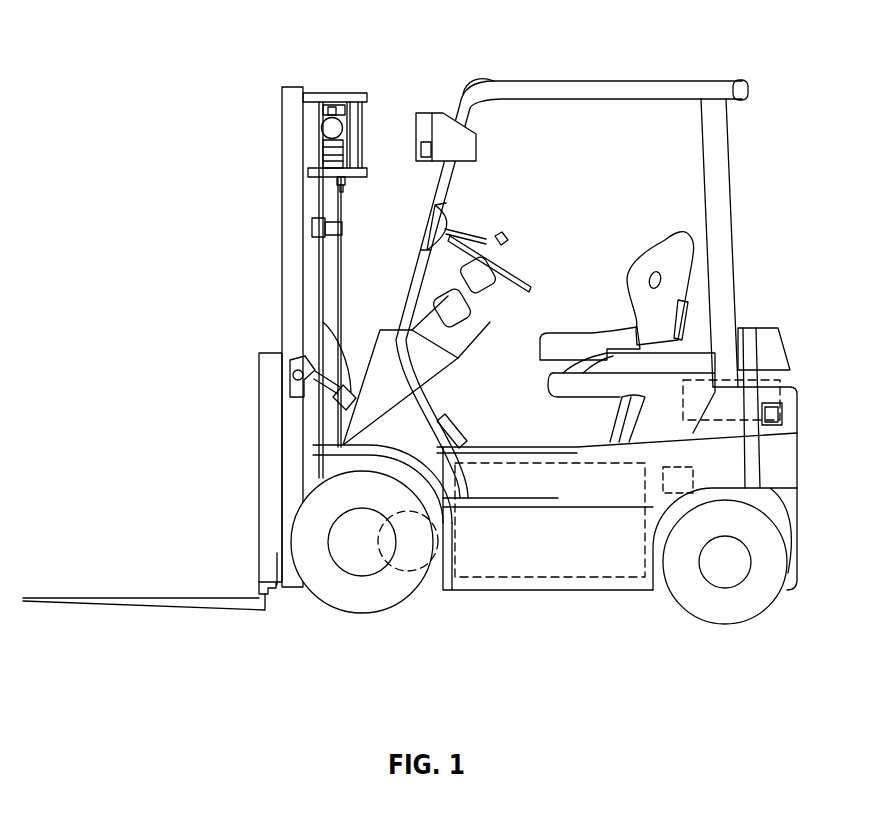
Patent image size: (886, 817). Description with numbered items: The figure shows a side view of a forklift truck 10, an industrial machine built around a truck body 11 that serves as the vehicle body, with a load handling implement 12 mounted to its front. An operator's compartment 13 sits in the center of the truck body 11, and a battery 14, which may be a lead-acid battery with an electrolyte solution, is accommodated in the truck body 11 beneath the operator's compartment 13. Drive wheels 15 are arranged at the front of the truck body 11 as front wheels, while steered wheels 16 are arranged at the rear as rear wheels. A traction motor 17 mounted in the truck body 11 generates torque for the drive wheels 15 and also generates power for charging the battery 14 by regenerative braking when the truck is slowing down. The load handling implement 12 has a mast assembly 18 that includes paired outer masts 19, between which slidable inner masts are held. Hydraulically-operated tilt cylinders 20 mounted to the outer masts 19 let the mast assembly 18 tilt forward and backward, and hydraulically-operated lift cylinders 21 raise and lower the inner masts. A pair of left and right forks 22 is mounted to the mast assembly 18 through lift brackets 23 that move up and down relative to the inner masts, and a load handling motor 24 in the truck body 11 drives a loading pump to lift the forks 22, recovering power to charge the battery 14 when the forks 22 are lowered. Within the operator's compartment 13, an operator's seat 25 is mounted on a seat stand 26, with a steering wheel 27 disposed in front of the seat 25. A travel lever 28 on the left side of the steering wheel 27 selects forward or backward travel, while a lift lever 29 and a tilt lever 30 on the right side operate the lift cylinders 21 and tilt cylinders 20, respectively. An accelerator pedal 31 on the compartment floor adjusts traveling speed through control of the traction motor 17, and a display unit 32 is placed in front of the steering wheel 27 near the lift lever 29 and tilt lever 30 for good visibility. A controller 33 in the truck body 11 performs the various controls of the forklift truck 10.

The forklift truck 10 is at (595, 48).
The truck body 11 is at (608, 592).
The load handling implement 12 is at (276, 291).
The operator's compartment 13 is at (590, 202).
The battery 14 is at (478, 586).
The drive wheels 15 is at (330, 614).
The steered wheels 16 is at (755, 622).
The traction motor 17 is at (403, 577).
The mast assembly 18 is at (282, 130).
The outer masts 19 is at (292, 183).
The tilt cylinders 20 is at (348, 384).
The lift cylinders 21 is at (345, 247).
The forks 22 is at (115, 598).
The lift brackets 23 is at (259, 468).
The load handling motor 24 is at (690, 468).
The operator's seat 25 is at (663, 253).
The seat stand 26 is at (712, 337).
The steering wheel 27 is at (528, 287).
The travel lever 28 is at (470, 320).
The lift lever 29 is at (505, 238).
The tilt lever 30 is at (492, 216).
The accelerator pedal 31 is at (456, 418).
The display unit 32 is at (396, 296).
The controller 33 is at (788, 362).